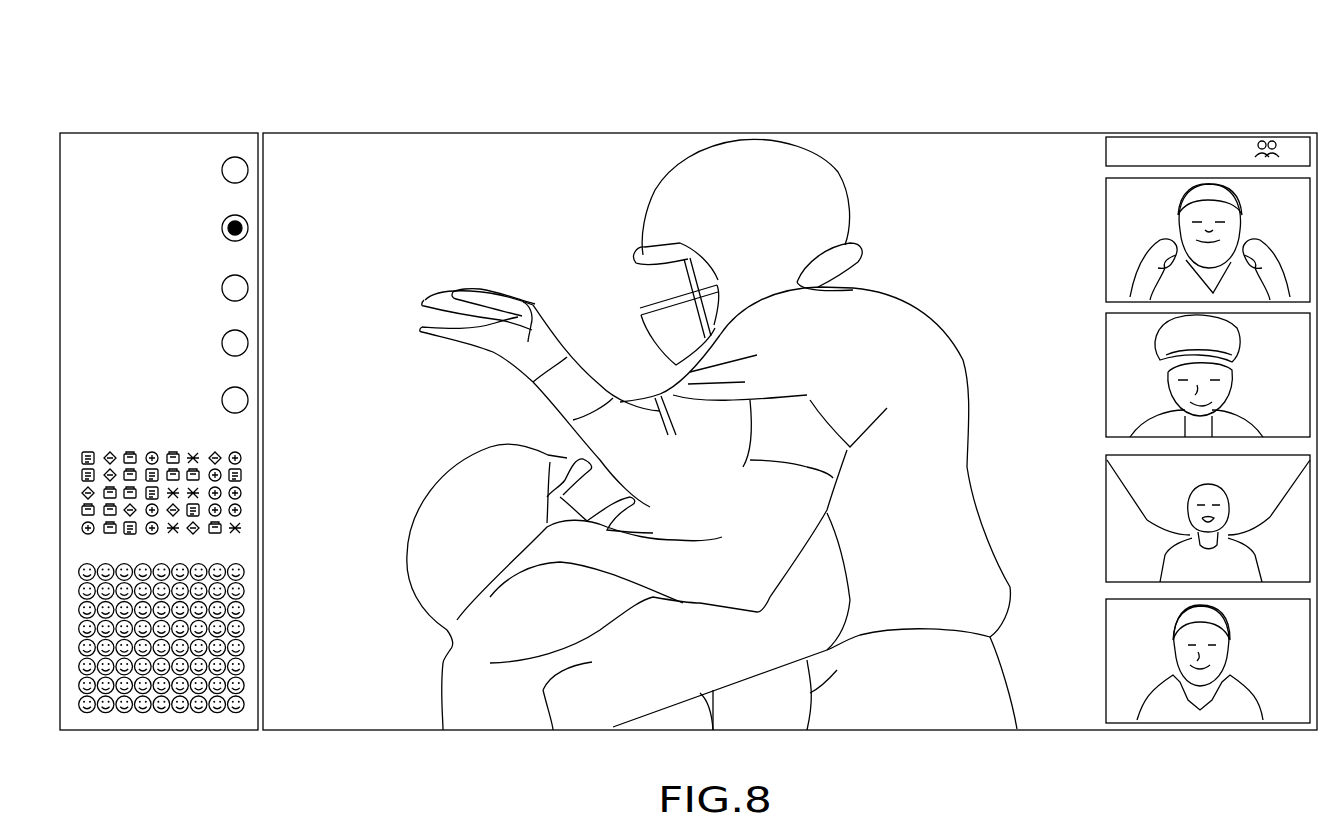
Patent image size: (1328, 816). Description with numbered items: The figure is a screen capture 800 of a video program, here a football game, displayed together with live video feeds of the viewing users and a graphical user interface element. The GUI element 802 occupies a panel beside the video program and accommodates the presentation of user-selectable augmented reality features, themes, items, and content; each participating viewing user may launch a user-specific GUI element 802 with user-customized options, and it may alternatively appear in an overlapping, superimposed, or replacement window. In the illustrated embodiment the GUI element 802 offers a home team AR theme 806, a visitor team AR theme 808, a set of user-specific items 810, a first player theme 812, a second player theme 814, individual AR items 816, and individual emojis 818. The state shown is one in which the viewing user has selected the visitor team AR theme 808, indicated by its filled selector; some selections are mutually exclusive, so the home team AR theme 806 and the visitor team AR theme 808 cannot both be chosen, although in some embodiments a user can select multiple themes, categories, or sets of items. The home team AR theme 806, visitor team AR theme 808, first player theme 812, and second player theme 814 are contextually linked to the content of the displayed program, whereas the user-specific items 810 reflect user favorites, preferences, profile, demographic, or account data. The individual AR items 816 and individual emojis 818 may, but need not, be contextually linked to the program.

The screen capture 800 is at (653, 97).
The GUI element 802 is at (176, 133).
The home team AR theme 806 is at (78, 137).
The visitor team AR theme 808 is at (72, 225).
The set of user-specific items 810 is at (68, 253).
The first player theme 812 is at (85, 341).
The second player theme 814 is at (83, 392).
The individual AR items 816 is at (85, 447).
The individual emojis 818 is at (85, 559).